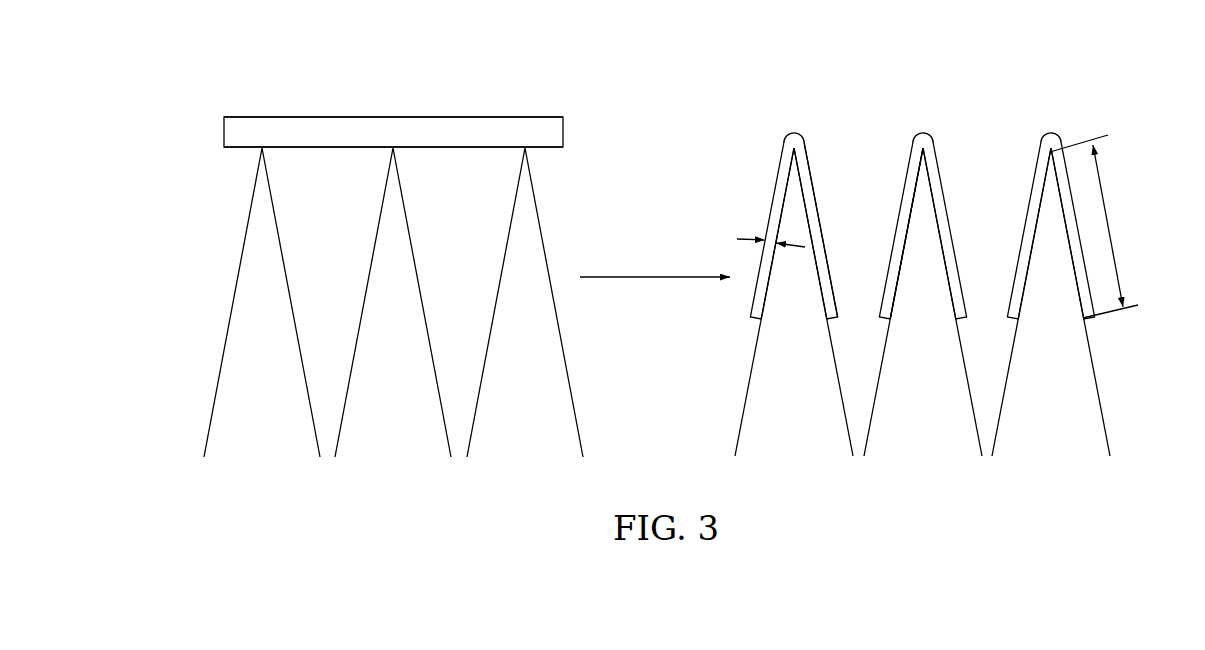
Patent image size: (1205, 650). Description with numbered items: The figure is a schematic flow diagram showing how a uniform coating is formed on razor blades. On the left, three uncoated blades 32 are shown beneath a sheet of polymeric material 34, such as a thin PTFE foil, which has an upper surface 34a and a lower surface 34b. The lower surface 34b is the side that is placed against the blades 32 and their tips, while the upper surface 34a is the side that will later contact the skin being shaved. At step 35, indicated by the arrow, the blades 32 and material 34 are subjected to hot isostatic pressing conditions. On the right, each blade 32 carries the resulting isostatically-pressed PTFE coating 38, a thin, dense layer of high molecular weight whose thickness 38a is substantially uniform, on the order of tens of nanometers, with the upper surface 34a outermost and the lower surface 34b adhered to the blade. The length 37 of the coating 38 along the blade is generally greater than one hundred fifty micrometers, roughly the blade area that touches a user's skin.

The blades 32 is at (309, 403).
The polymeric material 34 is at (365, 133).
The upper surface 34a is at (255, 116).
The lower surface 34b is at (237, 148).
The step 35 is at (655, 262).
The length 37 is at (1112, 228).
The coating 38 is at (780, 152).
The thickness 38a is at (769, 242).